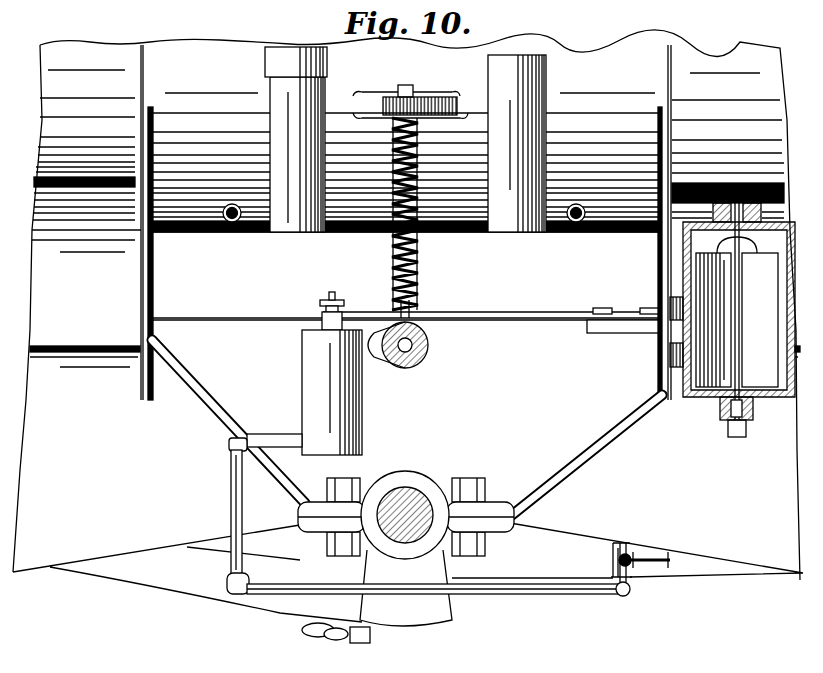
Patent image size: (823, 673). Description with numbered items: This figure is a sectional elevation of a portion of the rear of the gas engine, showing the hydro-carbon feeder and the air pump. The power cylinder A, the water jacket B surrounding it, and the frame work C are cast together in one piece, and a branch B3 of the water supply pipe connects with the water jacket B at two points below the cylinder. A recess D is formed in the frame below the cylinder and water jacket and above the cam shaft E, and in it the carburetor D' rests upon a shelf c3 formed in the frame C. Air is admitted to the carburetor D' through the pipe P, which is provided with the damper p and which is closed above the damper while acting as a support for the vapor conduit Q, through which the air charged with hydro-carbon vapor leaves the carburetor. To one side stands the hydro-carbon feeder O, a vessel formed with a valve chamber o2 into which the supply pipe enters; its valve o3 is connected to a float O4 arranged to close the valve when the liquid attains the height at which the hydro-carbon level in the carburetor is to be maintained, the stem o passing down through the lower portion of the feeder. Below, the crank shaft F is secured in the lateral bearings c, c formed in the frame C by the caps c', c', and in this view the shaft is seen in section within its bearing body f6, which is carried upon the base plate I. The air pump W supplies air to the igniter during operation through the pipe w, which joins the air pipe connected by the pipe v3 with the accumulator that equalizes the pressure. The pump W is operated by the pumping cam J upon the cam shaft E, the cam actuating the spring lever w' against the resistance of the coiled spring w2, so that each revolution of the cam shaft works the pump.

The power cylinder A is at (415, 218).
The water jacket B is at (405, 152).
The branch of the water supply pipe B3 is at (234, 204).
The damper p is at (296, 62).
The air pipe P is at (297, 154).
The vapor conduit Q is at (517, 143).
The coiled spring w2 is at (410, 201).
The recess D is at (106, 275).
The carburetor D' is at (568, 275).
The spring lever w' is at (405, 312).
The shelf c3 is at (240, 327).
The frame work C is at (405, 411).
The air pump W is at (332, 373).
The pumping cam J is at (386, 354).
The cam shaft E is at (440, 347).
The hydro-carbon feeder O is at (732, 300).
The float O4 is at (737, 320).
The valve stem o is at (741, 320).
The valve chamber o2 is at (747, 409).
The valve o3 is at (722, 412).
The base plate I is at (408, 572).
The bearing body f6 is at (377, 596).
The lateral bearing c is at (400, 517).
The cap c' is at (406, 517).
The crank shaft F is at (425, 491).
The pipe w is at (420, 515).
The pipe v3 is at (640, 566).